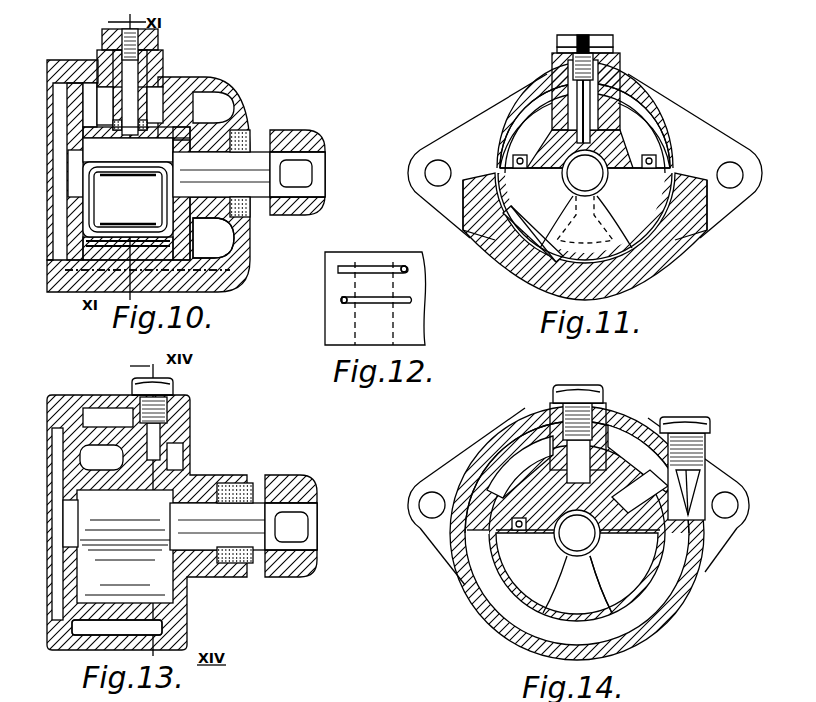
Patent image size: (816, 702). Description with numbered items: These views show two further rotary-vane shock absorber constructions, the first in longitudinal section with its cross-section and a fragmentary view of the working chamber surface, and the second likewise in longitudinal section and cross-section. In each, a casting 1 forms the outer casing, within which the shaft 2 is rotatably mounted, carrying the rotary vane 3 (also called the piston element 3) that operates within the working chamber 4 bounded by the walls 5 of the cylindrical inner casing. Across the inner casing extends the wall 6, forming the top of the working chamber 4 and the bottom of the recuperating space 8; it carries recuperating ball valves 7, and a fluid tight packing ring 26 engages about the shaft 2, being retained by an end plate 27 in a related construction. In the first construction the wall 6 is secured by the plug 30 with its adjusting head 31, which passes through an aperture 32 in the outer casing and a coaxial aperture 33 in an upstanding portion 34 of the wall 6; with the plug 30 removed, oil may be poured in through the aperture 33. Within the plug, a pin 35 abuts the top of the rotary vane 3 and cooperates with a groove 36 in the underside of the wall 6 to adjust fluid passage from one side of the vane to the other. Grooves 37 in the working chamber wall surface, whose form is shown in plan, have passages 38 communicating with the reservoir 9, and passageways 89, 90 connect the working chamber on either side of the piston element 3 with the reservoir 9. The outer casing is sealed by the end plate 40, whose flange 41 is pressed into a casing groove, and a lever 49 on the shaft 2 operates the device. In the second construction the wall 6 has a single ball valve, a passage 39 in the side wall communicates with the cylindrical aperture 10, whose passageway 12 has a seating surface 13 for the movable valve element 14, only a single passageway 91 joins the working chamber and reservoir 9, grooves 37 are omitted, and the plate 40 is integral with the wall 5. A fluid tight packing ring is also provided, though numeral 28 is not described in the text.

In FIG. 10, the casting 1 is at (214, 80).
In FIG. 10, the shaft 2 is at (249, 174).
In FIG. 11, the shaft 2 is at (572, 178).
In FIG. 13, the shaft 2 is at (257, 513).
In FIG. 14, the shaft 2 is at (573, 537).
In FIG. 10, the rotary vane 3 is at (158, 224).
In FIG. 11, the rotary vane 3 is at (600, 212).
In FIG. 13, the rotary vane 3 is at (90, 577).
In FIG. 14, the rotary vane 3 is at (590, 580).
In FIG. 11, the working chamber 4 is at (520, 177).
In FIG. 14, the working chamber 4 is at (547, 593).
In FIG. 10, the walls 5 is at (100, 272).
In FIG. 12, the walls 5 is at (415, 313).
In FIG. 11, the walls 5 is at (555, 203).
In FIG. 13, the walls 5 is at (88, 620).
In FIG. 14, the walls 5 is at (660, 560).
In FIG. 10, the wall 6 is at (136, 144).
In FIG. 11, the wall 6 is at (622, 153).
In FIG. 13, the wall 6 is at (175, 467).
In FIG. 14, the wall 6 is at (540, 497).
In FIG. 11, the recuperating ball valves 7 is at (510, 160).
In FIG. 14, the recuperating ball valves 7 is at (518, 536).
In FIG. 10, the recuperating space 8 is at (93, 97).
In FIG. 11, the recuperating space 8 is at (655, 118).
In FIG. 13, the recuperating space 8 is at (87, 450).
In FIG. 14, the recuperating space 8 is at (537, 463).
In FIG. 10, the reservoir 9 is at (230, 257).
In FIG. 11, the reservoir 9 is at (687, 193).
In FIG. 13, the reservoir 9 is at (157, 627).
In FIG. 14, the reservoir 9 is at (660, 597).
In FIG. 14, the aperture 10 is at (693, 483).
In FIG. 14, the passageway 12 is at (700, 533).
In FIG. 14, the seating surface 13 is at (683, 520).
In FIG. 14, the movable valve element 14 is at (690, 493).
In FIG. 10, the fluid tight packing ring 26 is at (249, 134).
In FIG. 13, the fluid tight packing ring 26 is at (245, 487).
In FIG. 10, the end plate 27 is at (252, 212).
In FIG. 13, the seal 28 is at (203, 483).
In FIG. 11, the plug 30 is at (617, 70).
In FIG. 13, the plug 30 is at (172, 404).
In FIG. 14, the plug 30 is at (603, 400).
In FIG. 10, the adjusting head 31 is at (158, 33).
In FIG. 11, the adjusting head 31 is at (612, 40).
In FIG. 13, the adjusting head 31 is at (173, 386).
In FIG. 14, the adjusting head 31 is at (580, 387).
In FIG. 11, the aperture 32 is at (605, 57).
In FIG. 13, the aperture 32 is at (178, 393).
In FIG. 14, the aperture 32 is at (547, 403).
In FIG. 11, the aperture 33 is at (615, 103).
In FIG. 13, the aperture 33 is at (153, 441).
In FIG. 14, the aperture 33 is at (573, 477).
In FIG. 11, the upstanding portion 34 is at (556, 107).
In FIG. 14, the upstanding portion 34 is at (600, 437).
In FIG. 10, the pin 35 is at (135, 70).
In FIG. 11, the pin 35 is at (560, 108).
In FIG. 10, the groove 36 is at (136, 70).
In FIG. 11, the groove 36 is at (560, 150).
In FIG. 12, the grooves 37 is at (377, 300).
In FIG. 11, the grooves 37 is at (573, 268).
In FIG. 12, the passages 38 is at (408, 268).
In FIG. 11, the passages 38 is at (530, 262).
In FIG. 14, the passage 39 is at (635, 513).
In FIG. 10, the end plate 40 is at (67, 104).
In FIG. 13, the end plate 40 is at (70, 473).
In FIG. 10, the flange 41 is at (85, 76).
In FIG. 10, the lever 49 is at (313, 138).
In FIG. 13, the lever 49 is at (300, 476).
In FIG. 11, the passageway 89 is at (683, 210).
In FIG. 11, the passageway 90 is at (481, 210).
In FIG. 14, the passageway 91 is at (483, 532).